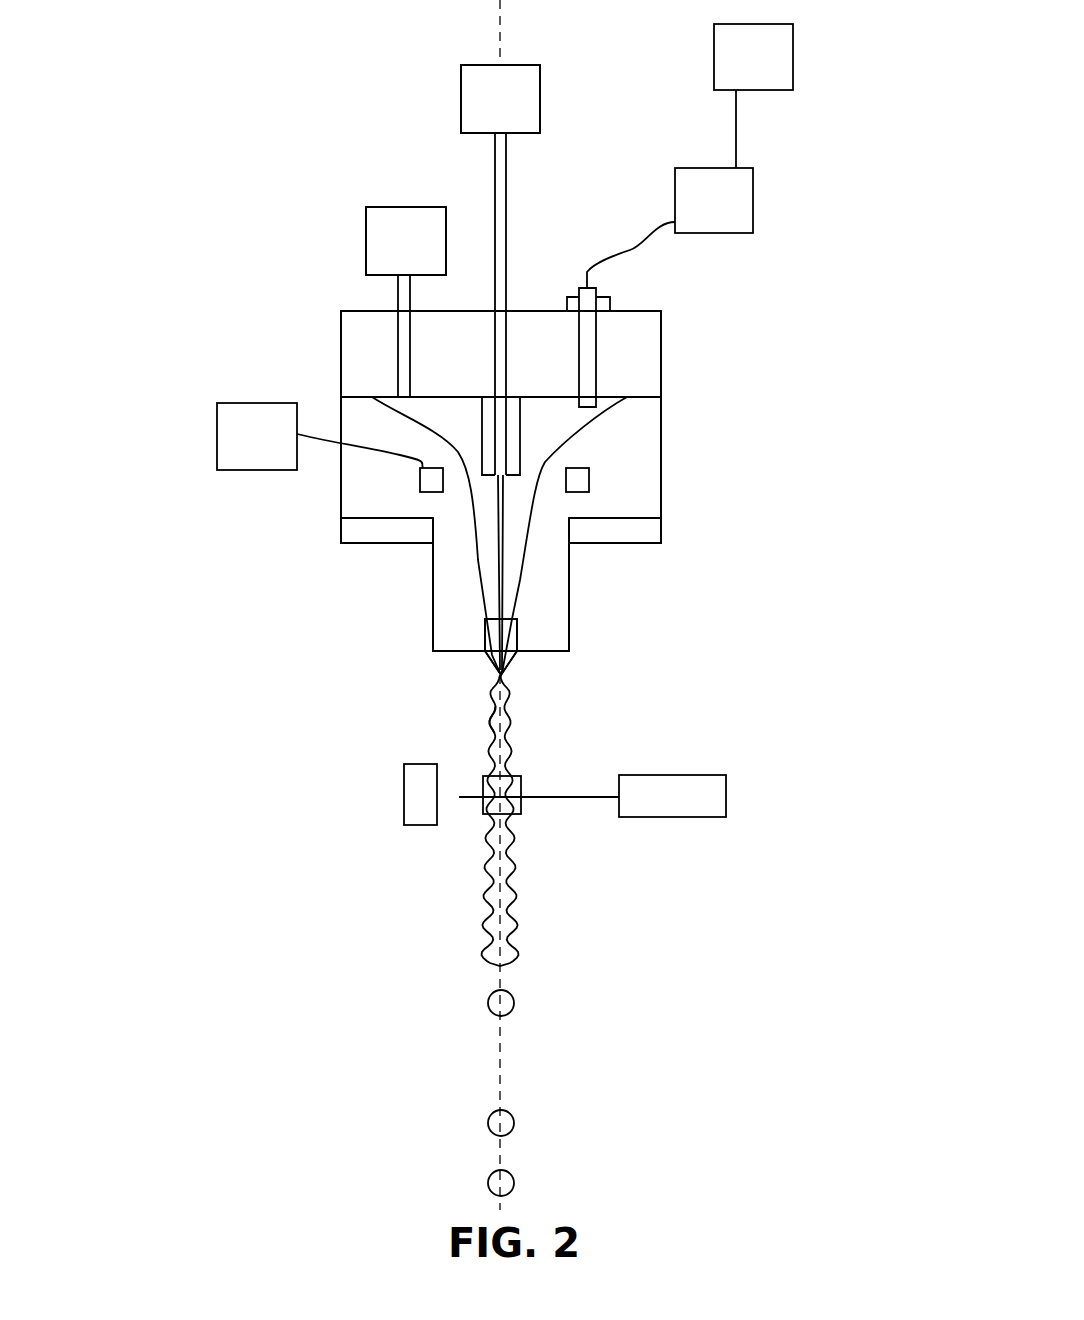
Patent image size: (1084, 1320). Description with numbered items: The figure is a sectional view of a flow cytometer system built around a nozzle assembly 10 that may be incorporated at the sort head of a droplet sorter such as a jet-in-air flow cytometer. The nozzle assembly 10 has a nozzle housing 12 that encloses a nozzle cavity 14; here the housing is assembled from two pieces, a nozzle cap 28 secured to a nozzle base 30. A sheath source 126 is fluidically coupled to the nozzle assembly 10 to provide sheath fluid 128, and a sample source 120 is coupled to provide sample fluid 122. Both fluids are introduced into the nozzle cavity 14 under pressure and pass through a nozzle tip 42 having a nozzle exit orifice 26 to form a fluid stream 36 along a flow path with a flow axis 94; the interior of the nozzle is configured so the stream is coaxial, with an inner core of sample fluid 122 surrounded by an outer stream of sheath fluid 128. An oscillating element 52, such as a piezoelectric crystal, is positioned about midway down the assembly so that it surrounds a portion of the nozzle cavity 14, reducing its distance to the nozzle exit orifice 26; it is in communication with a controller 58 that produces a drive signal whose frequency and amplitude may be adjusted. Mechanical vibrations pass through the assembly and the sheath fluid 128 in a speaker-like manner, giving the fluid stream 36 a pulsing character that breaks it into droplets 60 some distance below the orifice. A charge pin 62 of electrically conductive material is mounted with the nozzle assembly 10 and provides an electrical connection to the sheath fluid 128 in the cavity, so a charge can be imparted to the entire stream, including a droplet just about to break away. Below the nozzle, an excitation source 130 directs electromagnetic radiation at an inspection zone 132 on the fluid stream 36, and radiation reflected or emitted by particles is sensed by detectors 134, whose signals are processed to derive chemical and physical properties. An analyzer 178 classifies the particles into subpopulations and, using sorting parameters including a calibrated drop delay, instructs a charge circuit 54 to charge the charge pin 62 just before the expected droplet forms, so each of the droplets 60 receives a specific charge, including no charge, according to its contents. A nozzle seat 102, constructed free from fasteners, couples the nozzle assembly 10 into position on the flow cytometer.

The nozzle assembly 10 is at (688, 370).
The nozzle housing 12 is at (661, 427).
The nozzle cavity 14 is at (443, 420).
The nozzle exit orifice 26 is at (502, 675).
The nozzle cap 28 is at (350, 355).
The nozzle base 30 is at (645, 480).
The fluid stream 36 is at (492, 745).
The nozzle tip 42 is at (488, 657).
The oscillating element 52 is at (430, 480).
The charge circuit 54 is at (753, 203).
The controller 58 is at (228, 436).
The droplets 60 is at (514, 1185).
The charge pin 62 is at (610, 302).
The flow axis 94 is at (506, 717).
The nozzle seat 102 is at (608, 534).
The sample source 120 is at (461, 82).
The sample fluid 122 is at (500, 99).
The sheath source 126 is at (366, 227).
The sheath fluid 128 is at (406, 302).
The excitation source 130 is at (687, 789).
The inspection zone 132 is at (521, 807).
The detectors 134 is at (413, 790).
The analyzer 178 is at (725, 62).